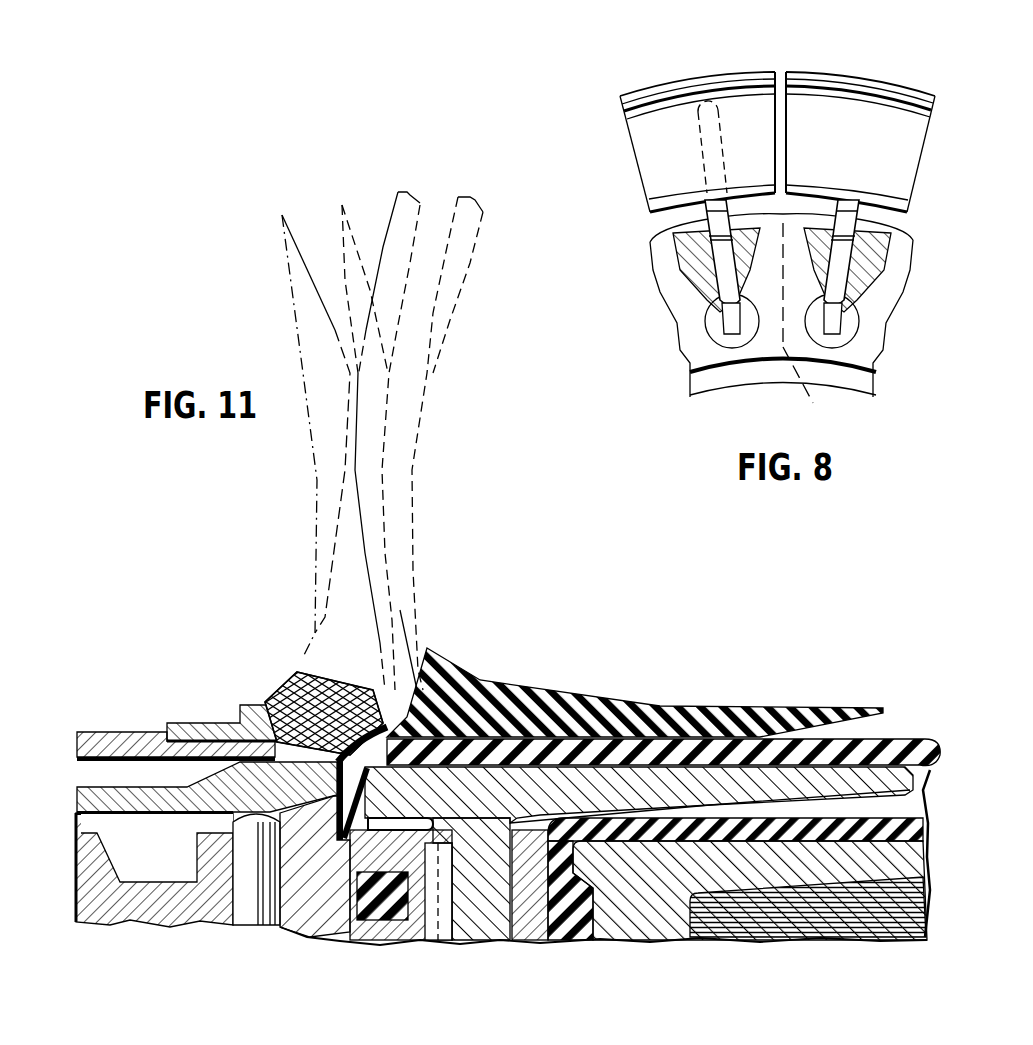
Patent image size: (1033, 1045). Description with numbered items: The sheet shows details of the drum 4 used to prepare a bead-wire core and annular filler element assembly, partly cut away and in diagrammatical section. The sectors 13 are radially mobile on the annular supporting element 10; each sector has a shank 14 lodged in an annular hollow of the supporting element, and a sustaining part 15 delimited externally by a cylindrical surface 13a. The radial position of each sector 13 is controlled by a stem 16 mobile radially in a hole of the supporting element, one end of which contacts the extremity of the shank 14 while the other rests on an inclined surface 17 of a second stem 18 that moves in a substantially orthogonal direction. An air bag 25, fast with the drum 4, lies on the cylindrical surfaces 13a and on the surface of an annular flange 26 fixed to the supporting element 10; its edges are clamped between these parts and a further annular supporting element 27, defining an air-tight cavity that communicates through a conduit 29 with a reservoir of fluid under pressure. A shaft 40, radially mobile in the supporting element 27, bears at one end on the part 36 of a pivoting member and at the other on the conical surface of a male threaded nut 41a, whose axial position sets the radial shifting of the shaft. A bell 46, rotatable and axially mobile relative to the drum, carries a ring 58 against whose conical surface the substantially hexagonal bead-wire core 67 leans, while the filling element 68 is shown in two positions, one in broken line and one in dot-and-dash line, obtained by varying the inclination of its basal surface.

In FIG. 11, the drum 4 is at (204, 662).
In FIG. 11, the annular supporting element 10 is at (385, 935).
In FIG. 8, the annular supporting element 10 is at (663, 280).
In FIG. 11, the sector 13 is at (490, 808).
In FIG. 8, the sector 13 is at (829, 74).
In FIG. 11, the cylindrical surface 13a is at (623, 733).
In FIG. 8, the cylindrical surface 13a is at (690, 83).
In FIG. 11, the shank 14 is at (487, 930).
In FIG. 8, the shank 14 is at (655, 147).
In FIG. 11, the sustaining part 15 is at (787, 773).
In FIG. 8, the stem 16 is at (668, 224).
In FIG. 8, the inclined surface 17 is at (840, 332).
In FIG. 8, the stem 18 is at (708, 323).
In FIG. 11, the air bag 25 is at (395, 260).
In FIG. 11, the annular flange 26 is at (763, 870).
In FIG. 11, the annular supporting element 27 is at (148, 908).
In FIG. 8, the conduit 29 is at (805, 325).
In FIG. 11, the part of member 36 is at (143, 800).
In FIG. 11, the shaft 40 is at (255, 908).
In FIG. 11, the male threaded nut 41a is at (155, 0).
In FIG. 11, the bell 46 is at (138, 733).
In FIG. 11, the ring 58 is at (240, 705).
In FIG. 11, the bead-wire core 67 is at (284, 674).
In FIG. 11, the filling element 68 is at (317, 407).